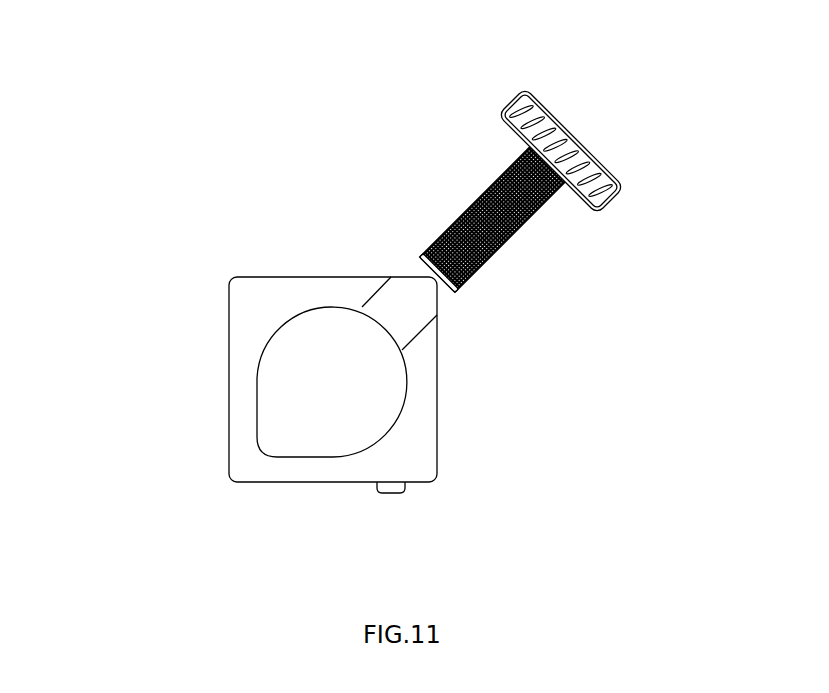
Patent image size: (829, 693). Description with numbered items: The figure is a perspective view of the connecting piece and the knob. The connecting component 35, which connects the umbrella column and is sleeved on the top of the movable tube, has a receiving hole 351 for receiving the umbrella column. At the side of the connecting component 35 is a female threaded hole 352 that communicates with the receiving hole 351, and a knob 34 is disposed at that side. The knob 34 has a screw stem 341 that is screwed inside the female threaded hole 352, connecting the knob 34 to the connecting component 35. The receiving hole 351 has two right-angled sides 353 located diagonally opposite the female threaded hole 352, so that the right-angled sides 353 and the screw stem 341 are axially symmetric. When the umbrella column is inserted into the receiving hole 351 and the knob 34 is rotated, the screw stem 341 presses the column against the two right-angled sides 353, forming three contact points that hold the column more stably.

The knob 34 is at (573, 253).
The screw stem 341 is at (517, 240).
The connecting component 35 is at (433, 377).
The receiving hole 351 is at (322, 362).
The female threaded hole 352 is at (397, 290).
The right-angled sides 353 is at (257, 423).